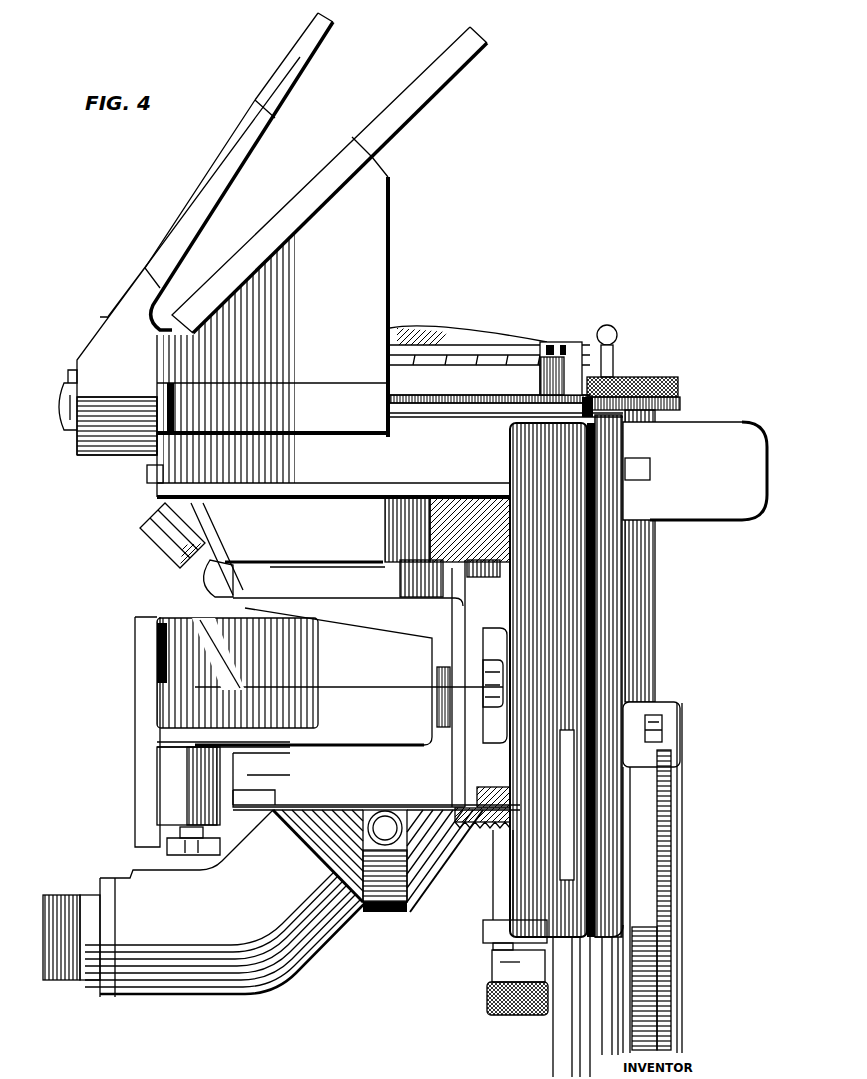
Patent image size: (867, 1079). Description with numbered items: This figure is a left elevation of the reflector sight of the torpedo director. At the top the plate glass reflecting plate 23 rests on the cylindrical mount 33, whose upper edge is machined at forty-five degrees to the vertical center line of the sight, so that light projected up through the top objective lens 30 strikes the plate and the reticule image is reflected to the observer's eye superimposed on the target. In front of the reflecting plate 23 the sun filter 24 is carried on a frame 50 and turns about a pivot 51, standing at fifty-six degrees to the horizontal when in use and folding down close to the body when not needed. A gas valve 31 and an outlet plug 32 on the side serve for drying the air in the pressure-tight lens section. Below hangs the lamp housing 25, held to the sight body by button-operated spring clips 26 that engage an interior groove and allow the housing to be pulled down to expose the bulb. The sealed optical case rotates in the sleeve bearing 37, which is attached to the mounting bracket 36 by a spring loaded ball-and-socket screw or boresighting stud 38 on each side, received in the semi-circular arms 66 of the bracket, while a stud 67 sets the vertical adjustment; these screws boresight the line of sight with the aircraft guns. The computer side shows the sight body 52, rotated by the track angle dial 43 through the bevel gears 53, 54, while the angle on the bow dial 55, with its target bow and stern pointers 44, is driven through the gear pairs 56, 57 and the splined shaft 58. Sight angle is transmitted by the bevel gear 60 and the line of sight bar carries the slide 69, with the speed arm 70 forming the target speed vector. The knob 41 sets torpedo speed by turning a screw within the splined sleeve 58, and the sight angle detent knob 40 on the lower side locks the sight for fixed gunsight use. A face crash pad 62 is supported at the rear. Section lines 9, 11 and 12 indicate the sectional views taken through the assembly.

The sun filter 24 is at (300, 57).
The reflecting plate 23 is at (447, 68).
The cylindrical mount 33 is at (343, 212).
The frame 50 is at (110, 340).
The pivot 51 is at (62, 400).
The top objective lens 30 is at (443, 332).
The sight body 52 is at (500, 350).
The gear pair 57 is at (468, 410).
The pointer 44 is at (555, 342).
The angle on the bow dial 55 is at (582, 375).
The knob 41 is at (678, 387).
The gear pair 56 is at (680, 403).
The section line 11- 11 is at (608, 303).
The splined shaft 58 is at (628, 697).
The face crash pad 62 is at (725, 462).
The bevel gear 53 is at (667, 747).
The bevel gear 54 is at (670, 797).
The track angle dial 43 is at (682, 960).
The slide 69 is at (573, 1030).
The speed arm 70 is at (587, 1055).
The bevel gear 60 is at (505, 820).
The boresighting stud 38 is at (488, 665).
The bracket arm 66 is at (373, 718).
The gas valve 31 is at (167, 517).
The outlet plug 32 is at (213, 580).
The section line 9- 9 is at (203, 647).
The sleeve bearing 37 is at (253, 750).
The mounting bracket 36 is at (147, 780).
The stud 67 is at (160, 850).
The section line 12- 12 is at (560, 900).
The sight angle detent knob 40 is at (488, 997).
The spring clip 26 is at (382, 913).
The lamp housing 25 is at (276, 916).